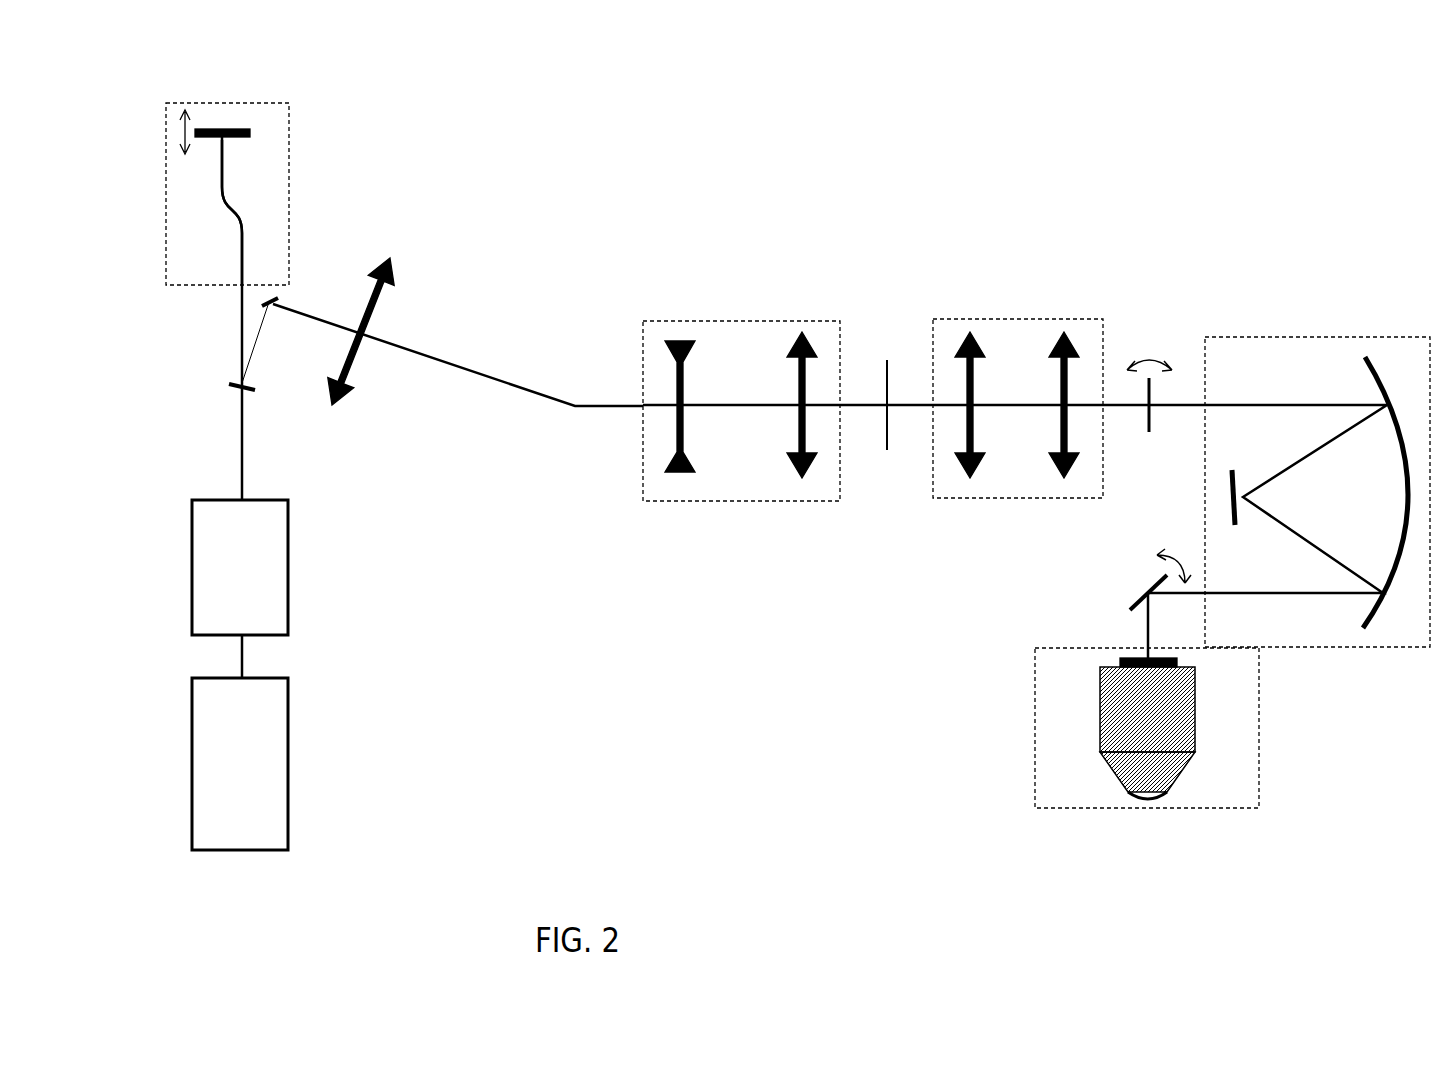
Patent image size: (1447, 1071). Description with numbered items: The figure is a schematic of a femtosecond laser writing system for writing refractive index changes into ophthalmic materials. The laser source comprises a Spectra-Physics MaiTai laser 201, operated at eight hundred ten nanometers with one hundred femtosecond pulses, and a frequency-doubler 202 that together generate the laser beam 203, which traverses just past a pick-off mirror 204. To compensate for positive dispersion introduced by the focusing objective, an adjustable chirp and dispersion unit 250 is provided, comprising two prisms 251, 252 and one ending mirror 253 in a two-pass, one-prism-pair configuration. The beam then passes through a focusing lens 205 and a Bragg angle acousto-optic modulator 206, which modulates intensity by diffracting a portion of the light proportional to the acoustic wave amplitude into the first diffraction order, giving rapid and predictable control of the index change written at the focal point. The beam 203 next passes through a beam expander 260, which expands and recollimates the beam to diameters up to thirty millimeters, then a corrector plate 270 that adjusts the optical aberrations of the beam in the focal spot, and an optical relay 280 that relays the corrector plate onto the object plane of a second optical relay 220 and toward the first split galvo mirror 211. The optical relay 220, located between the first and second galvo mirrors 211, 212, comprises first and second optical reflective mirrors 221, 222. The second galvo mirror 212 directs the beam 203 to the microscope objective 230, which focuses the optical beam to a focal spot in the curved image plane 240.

The MaiTai laser 201 is at (290, 760).
The frequency-doubler 202 is at (290, 572).
The laser beam 203 is at (245, 460).
The pick-off mirror 204 is at (226, 388).
The focusing lens 205 is at (402, 304).
The acousto-optic modulator 206 is at (578, 360).
The first galvo mirror 211 is at (1150, 345).
The second galvo mirror 212 is at (1127, 602).
The optical relay 220 is at (1289, 459).
The first optical reflective mirror 221 is at (1395, 445).
The second optical reflective mirror 222 is at (1272, 430).
The microscope objective 230 is at (1063, 753).
The curved image plane 240 is at (1127, 793).
The adjustable chirp and dispersion unit 250 is at (227, 166).
The prism 251 is at (208, 240).
The prism 252 is at (243, 185).
The ending mirror 253 is at (253, 132).
The beam expander 260 is at (862, 305).
The corrector plate 270 is at (887, 462).
The optical relay 280 is at (1018, 374).